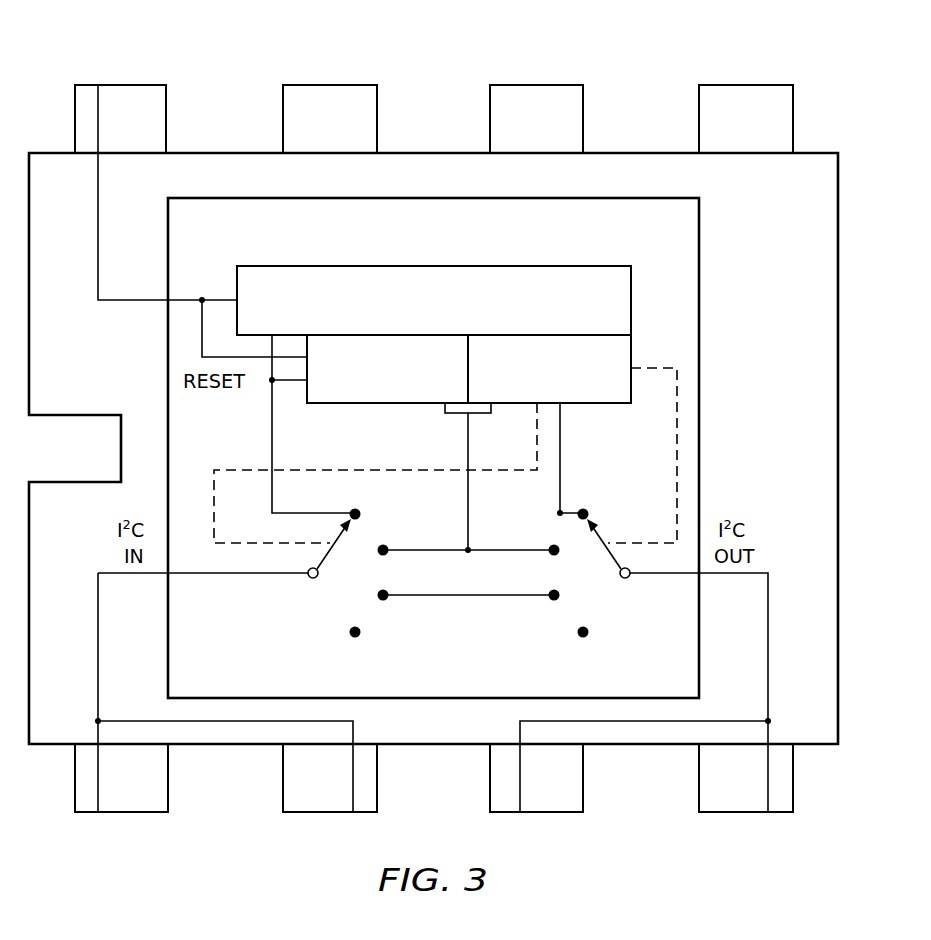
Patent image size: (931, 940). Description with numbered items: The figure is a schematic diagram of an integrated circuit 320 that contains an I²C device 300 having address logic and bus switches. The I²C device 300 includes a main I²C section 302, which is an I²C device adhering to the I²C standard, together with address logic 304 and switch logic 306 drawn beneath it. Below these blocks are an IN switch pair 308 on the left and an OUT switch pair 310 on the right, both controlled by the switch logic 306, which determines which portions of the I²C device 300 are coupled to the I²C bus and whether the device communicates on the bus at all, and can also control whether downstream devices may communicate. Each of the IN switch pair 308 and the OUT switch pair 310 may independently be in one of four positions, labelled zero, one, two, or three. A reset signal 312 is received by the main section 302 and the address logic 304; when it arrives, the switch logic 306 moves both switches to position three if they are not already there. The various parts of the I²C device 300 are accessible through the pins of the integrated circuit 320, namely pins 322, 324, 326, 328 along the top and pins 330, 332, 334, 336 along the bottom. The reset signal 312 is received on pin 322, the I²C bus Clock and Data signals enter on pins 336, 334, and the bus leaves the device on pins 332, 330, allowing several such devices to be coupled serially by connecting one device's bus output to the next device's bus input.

The I²C device 300 is at (705, 342).
The main I²C section 302 is at (445, 266).
The address logic 304 is at (387, 405).
The switch logic 306 is at (583, 405).
The IN switch pair 308 is at (307, 627).
The OUT switch pair 310 is at (628, 627).
The reset signal 312 is at (140, 305).
The integrated circuit 320 is at (437, 750).
The pin 322 is at (120, 85).
The pin 324 is at (317, 85).
The pin 326 is at (548, 85).
The pin 328 is at (757, 85).
The pin 330 is at (745, 812).
The pin 332 is at (545, 812).
The pin 334 is at (317, 812).
The pin 336 is at (120, 812).